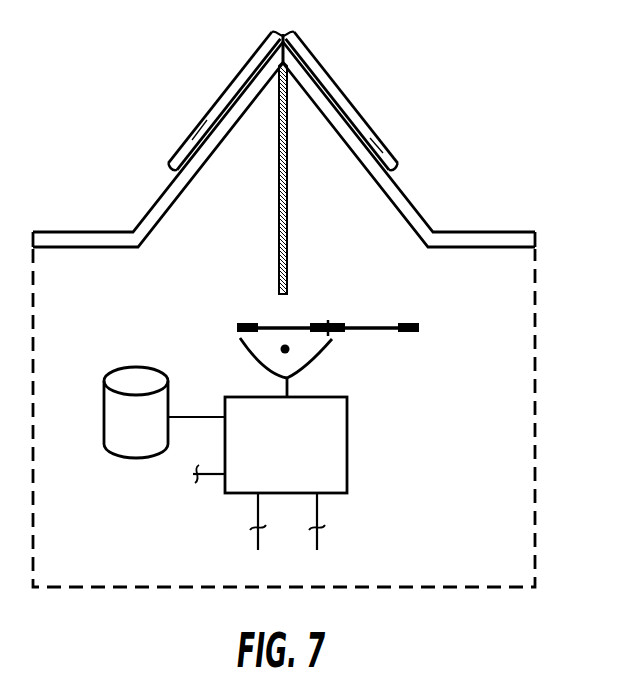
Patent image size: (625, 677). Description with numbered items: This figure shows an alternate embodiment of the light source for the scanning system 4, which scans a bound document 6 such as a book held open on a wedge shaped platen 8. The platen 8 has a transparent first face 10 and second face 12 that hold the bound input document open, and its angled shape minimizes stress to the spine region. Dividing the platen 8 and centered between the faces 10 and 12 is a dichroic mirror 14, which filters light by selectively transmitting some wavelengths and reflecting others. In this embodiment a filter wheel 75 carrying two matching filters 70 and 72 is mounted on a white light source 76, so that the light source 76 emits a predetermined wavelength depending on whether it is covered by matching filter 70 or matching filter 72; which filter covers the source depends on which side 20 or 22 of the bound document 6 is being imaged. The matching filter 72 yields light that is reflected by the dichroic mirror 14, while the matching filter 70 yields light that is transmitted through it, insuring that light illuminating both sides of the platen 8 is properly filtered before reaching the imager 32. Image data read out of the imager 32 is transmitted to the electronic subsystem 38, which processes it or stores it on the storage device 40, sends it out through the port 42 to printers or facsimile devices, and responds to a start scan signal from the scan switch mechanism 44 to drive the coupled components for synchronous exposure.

The scanning system 4 is at (535, 403).
The bound document 6 is at (377, 62).
The wedge shaped platen 8 is at (243, 178).
The first face 10 is at (160, 197).
The second face 12 is at (400, 195).
The dichroic mirror 14 is at (278, 228).
The side of bound document 20 is at (207, 118).
The side of bound document 22 is at (357, 128).
The imager 32 is at (310, 532).
The electronic subsystem (ESS) 38 is at (347, 463).
The storage device 40 is at (138, 366).
The port 42 is at (193, 474).
The scan switch mechanism 44 is at (254, 532).
The matching filter 70 is at (287, 325).
The matching filter 72 is at (372, 323).
The filter wheel 75 is at (252, 323).
The white light source 76 is at (285, 352).